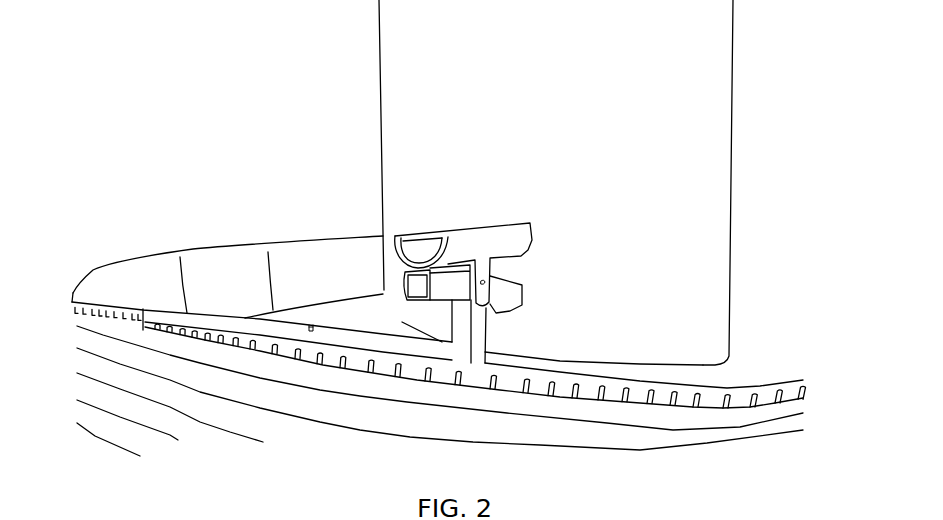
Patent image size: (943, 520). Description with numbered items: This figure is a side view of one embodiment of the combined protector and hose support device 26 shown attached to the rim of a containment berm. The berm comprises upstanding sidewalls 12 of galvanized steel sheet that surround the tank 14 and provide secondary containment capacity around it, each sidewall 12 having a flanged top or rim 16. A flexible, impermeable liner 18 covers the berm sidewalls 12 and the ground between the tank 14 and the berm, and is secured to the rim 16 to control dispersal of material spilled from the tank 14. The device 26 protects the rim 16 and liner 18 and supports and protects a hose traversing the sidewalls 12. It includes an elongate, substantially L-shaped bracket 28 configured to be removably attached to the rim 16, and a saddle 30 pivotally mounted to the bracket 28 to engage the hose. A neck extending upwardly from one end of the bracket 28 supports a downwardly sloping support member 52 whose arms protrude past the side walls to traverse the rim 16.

The sidewall 12 is at (440, 391).
The tank 14 is at (556, 182).
The rim 16 is at (787, 395).
The liner 18 is at (272, 278).
The combined protector and hose support device 26 is at (477, 222).
The elongate bracket 28 is at (383, 344).
The saddle 30 is at (518, 236).
The support member 52 is at (527, 300).